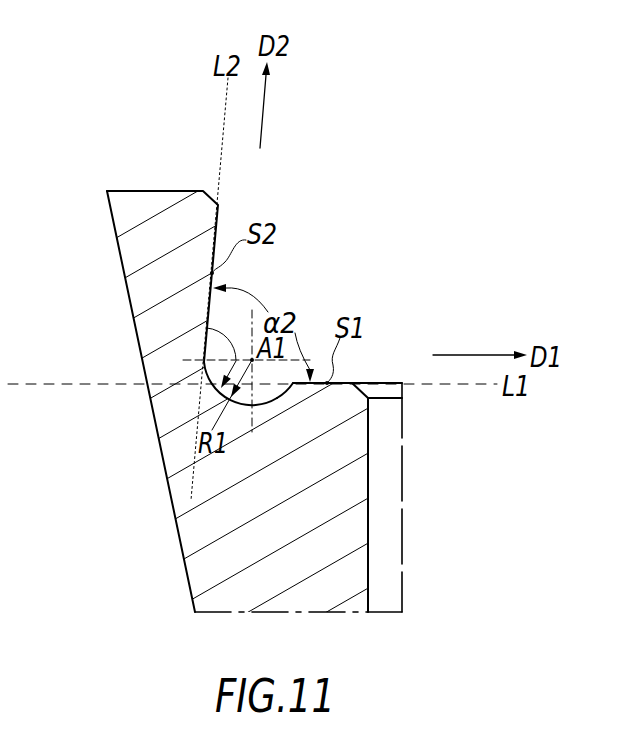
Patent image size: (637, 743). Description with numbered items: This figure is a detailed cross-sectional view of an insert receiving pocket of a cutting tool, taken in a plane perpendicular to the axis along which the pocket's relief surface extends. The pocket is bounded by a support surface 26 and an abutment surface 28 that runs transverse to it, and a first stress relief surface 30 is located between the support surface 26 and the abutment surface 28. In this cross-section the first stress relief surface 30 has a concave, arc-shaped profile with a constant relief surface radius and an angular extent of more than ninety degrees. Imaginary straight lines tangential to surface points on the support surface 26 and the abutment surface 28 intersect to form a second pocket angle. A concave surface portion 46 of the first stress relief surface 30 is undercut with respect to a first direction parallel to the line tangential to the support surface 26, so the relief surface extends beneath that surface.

The support surface 26 is at (329, 383).
The abutment surface 28 is at (217, 232).
The first stress relief surface 30 is at (207, 318).
The concave surface portion 46 is at (293, 383).